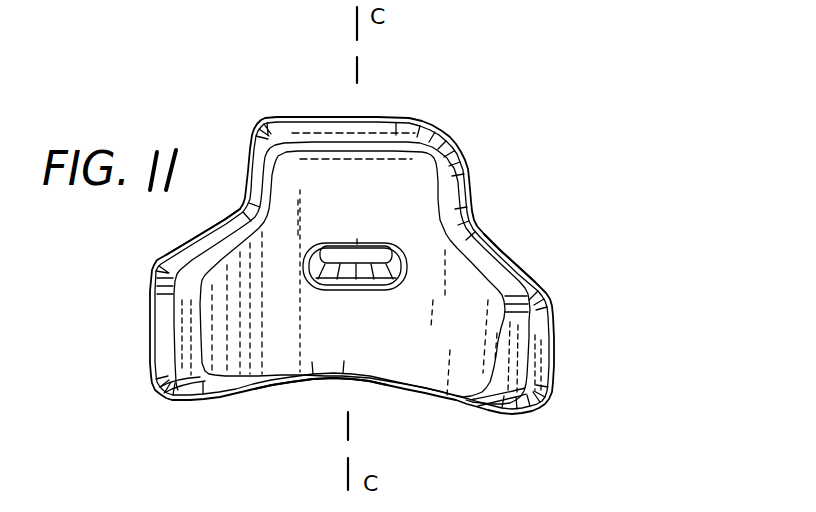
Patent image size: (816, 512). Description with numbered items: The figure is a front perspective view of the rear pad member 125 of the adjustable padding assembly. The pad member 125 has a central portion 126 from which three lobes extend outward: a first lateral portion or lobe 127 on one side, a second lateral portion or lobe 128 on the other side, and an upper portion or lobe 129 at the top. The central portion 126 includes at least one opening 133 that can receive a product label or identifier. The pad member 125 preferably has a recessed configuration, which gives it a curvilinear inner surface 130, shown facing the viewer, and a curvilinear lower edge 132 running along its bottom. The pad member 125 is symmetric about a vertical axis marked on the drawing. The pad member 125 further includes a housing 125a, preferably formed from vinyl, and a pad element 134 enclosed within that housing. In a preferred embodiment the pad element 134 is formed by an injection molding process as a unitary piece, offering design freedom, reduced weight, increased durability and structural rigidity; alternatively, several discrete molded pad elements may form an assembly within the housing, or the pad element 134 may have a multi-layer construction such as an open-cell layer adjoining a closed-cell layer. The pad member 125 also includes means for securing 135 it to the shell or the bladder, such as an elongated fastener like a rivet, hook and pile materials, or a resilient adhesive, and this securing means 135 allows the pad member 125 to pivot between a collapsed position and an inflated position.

The rear pad member 125 is at (551, 137).
The housing 125a is at (493, 248).
The central portion 126 is at (380, 327).
The first lateral portion or lobe 127 is at (193, 333).
The second lateral portion or lobe 128 is at (513, 352).
The upper portion or lobe 129 is at (357, 190).
The curvilinear inner surface 130 is at (302, 368).
The curvilinear lower edge 132 is at (303, 379).
The opening 133 is at (367, 256).
The pad element 134 is at (212, 283).
The means for securing 135 is at (133, 511).